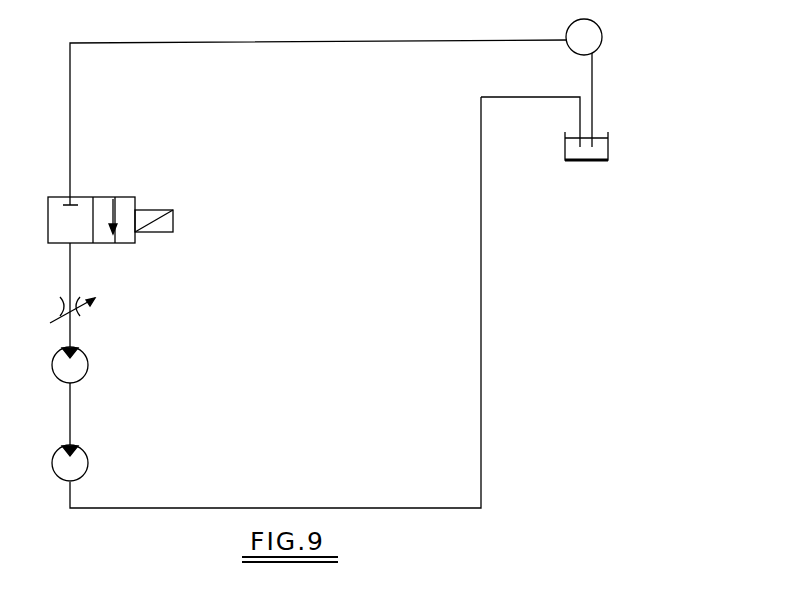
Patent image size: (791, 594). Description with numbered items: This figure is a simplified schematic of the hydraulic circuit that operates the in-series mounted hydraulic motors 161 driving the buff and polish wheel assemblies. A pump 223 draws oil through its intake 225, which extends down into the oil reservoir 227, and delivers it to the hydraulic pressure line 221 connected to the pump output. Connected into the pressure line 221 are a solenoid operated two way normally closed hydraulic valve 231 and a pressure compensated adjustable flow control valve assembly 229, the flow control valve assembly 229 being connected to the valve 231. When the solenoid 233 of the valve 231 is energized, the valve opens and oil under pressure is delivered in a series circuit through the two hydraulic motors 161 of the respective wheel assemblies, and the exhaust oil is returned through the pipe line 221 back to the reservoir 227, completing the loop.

The hydraulic pressure line 221 is at (377, 22).
The pump 223 is at (602, 47).
The intake 225 is at (592, 80).
The oil reservoir 227 is at (587, 162).
The pressure compensated adjustable flow control valve assembly 229 is at (78, 316).
The solenoid operated two way normally closed hydraulic valve 231 is at (60, 245).
The solenoid 233 is at (153, 232).
The hydraulic motors 161 is at (88, 362).